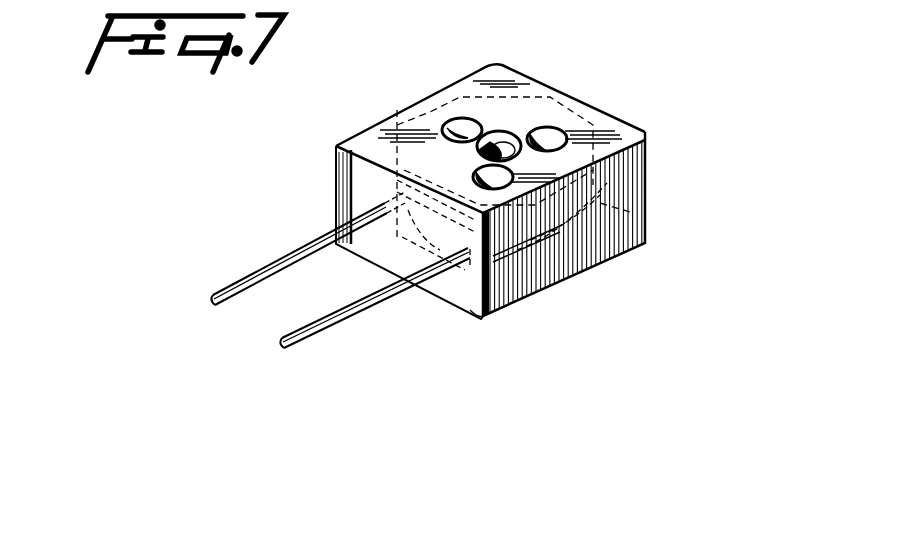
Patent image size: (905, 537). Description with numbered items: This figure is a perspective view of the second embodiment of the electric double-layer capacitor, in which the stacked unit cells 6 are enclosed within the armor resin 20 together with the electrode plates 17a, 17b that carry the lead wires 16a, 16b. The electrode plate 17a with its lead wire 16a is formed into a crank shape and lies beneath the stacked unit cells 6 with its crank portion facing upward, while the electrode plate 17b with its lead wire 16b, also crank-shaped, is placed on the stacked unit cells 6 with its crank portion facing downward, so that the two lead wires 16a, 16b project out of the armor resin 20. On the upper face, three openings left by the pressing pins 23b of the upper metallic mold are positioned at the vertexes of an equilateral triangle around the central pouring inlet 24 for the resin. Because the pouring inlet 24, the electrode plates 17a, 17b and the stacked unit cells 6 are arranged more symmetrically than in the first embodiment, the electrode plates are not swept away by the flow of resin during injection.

The stacked unit cells 6 is at (630, 212).
The lead wire 16a is at (233, 285).
The lead wire 16b is at (324, 330).
The electrode plate 17a is at (590, 262).
The electrode plate 17b is at (598, 100).
The armor resin 20 is at (537, 290).
The pressing pins 23b is at (457, 125).
The pouring inlet 24 is at (507, 135).